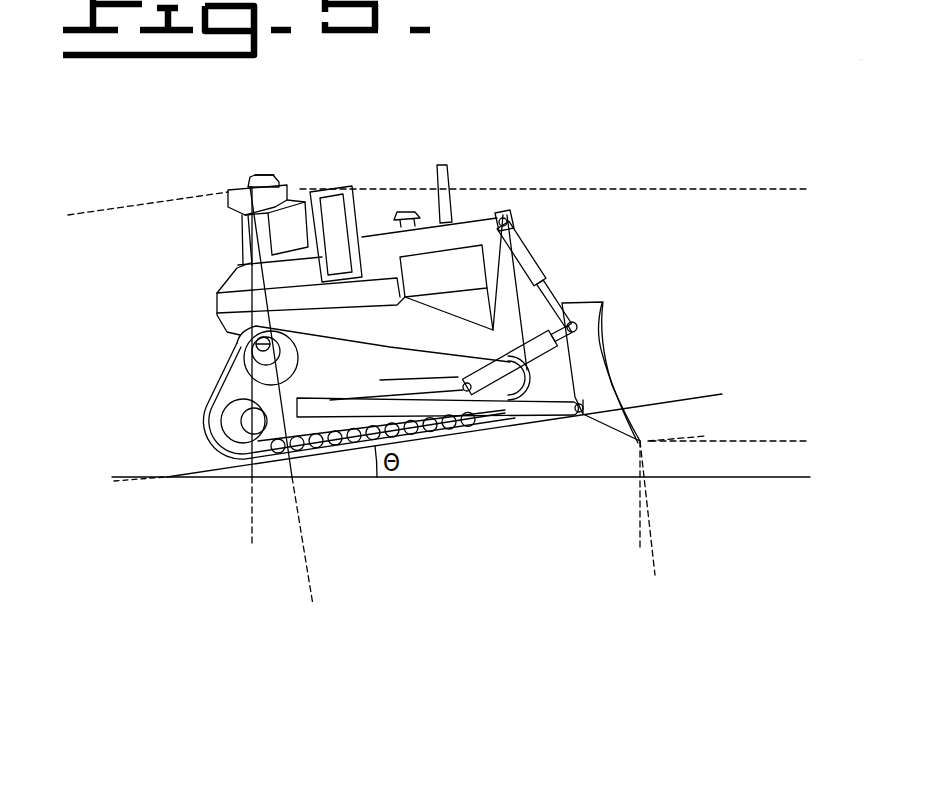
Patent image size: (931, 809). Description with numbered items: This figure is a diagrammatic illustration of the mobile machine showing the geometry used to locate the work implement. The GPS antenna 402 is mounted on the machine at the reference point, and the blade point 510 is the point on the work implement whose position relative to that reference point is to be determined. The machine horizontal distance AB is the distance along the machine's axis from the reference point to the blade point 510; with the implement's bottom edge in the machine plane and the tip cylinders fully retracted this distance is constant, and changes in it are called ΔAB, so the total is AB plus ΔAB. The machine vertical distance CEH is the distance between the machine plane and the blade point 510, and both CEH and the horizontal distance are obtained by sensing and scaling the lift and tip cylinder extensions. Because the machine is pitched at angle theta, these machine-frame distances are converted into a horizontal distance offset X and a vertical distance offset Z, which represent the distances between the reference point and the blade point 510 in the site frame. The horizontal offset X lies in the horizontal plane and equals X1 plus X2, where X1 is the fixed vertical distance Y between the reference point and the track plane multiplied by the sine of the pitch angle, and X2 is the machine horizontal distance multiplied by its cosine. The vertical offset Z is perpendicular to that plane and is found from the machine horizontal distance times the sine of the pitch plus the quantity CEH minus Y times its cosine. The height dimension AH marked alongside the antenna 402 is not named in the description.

The GPS antenna 402 is at (275, 176).
The blade point 510 is at (638, 445).
The antenna height AH is at (80, 213).
The vertical distance offset Z is at (798, 190).
The machine vertical distance CEH is at (697, 363).
The horizontal offset component X1 is at (327, 485).
The horizontal offset component X2 is at (637, 503).
The horizontal distance offset X is at (637, 529).
The machine horizontal distance AB is at (650, 565).